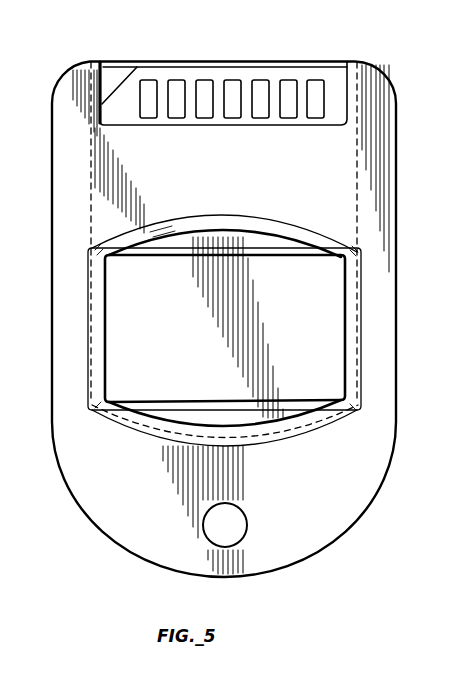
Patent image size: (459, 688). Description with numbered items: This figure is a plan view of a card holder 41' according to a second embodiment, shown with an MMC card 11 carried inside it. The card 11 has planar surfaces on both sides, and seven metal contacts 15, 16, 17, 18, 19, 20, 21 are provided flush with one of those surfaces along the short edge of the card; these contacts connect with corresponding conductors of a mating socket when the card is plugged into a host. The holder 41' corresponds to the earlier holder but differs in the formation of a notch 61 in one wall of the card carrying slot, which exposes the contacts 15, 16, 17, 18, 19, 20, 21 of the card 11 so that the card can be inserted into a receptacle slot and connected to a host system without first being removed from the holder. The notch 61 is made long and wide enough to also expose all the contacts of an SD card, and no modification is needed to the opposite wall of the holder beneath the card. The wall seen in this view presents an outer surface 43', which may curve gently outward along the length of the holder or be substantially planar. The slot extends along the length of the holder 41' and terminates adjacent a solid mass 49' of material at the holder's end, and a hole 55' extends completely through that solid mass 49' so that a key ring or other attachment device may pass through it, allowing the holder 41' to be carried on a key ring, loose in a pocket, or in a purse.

The MMC card 11 is at (331, 88).
The metal contact 15 is at (147, 90).
The metal contact 16 is at (177, 90).
The metal contact 17 is at (209, 90).
The metal contact 18 is at (228, 90).
The metal contact 19 is at (260, 90).
The metal contact 20 is at (290, 90).
The metal contact 21 is at (320, 102).
The notch 61 is at (112, 80).
The card holder 41' is at (223, 331).
The outer surface 43' is at (87, 117).
The solid mass 49' is at (279, 510).
The hole 55' is at (298, 542).